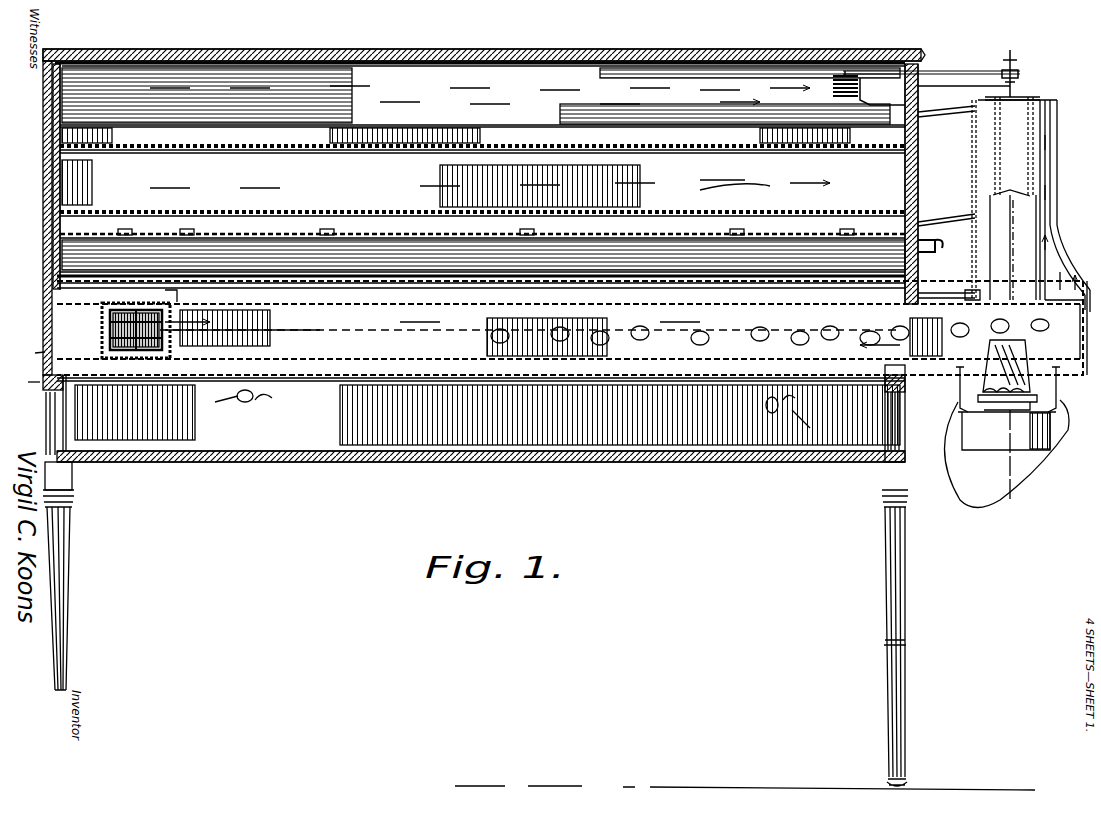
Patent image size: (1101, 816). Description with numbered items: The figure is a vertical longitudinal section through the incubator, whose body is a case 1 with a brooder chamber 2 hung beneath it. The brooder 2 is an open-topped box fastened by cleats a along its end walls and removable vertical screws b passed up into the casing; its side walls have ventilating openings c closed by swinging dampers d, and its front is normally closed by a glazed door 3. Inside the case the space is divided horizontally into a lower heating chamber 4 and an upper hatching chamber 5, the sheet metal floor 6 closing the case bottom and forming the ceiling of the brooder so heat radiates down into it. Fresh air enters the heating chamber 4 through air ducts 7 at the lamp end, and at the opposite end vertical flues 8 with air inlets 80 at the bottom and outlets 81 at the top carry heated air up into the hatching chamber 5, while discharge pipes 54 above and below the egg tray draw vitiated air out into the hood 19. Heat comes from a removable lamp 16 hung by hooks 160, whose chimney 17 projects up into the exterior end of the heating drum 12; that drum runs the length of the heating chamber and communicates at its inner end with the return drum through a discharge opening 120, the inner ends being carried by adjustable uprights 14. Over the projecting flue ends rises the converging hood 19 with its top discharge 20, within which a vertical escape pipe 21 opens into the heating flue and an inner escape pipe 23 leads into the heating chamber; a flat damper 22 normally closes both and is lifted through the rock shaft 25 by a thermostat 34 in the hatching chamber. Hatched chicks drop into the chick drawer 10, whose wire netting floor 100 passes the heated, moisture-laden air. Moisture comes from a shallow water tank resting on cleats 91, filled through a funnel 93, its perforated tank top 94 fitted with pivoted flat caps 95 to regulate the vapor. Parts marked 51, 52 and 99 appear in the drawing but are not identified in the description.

The case 1 is at (598, 50).
The brooder chamber 2 is at (510, 452).
The door 3 is at (78, 432).
The heating chamber 4 is at (384, 340).
The hatching chamber 5 is at (1060, 330).
The floor 6 is at (458, 372).
The air ducts 7 is at (908, 376).
The vertical flues 8 is at (46, 208).
The chick drawer 10 is at (418, 190).
The heating drum 12 is at (604, 333).
The uprights 14 is at (212, 290).
The lamp 16 is at (997, 450).
The metal chimney 17 is at (1037, 352).
The hood 19 is at (1060, 262).
The top discharge 20 is at (1052, 135).
The escape pipe 21 is at (1052, 222).
The damper 22 is at (1038, 97).
The escape pipe 23 is at (1015, 188).
The rock shaft 25 is at (962, 56).
The thermostat 34 is at (876, 108).
The partition 51 is at (412, 144).
The end wall 52 is at (903, 168).
The discharge pipes 54 is at (952, 118).
The air inlets 80 is at (55, 293).
The outlets 81 is at (138, 95).
The cleats 91 is at (78, 280).
The funnel 93 is at (940, 248).
The tank top 94 is at (305, 235).
The flat caps 95 is at (140, 234).
The tray bottom 99 is at (540, 255).
The wire netting floor 100 is at (632, 211).
The discharge opening 120 is at (130, 360).
The hooks 160 is at (1004, 464).
The cleats a is at (880, 394).
The vertical screws b is at (880, 418).
The ventilating openings c is at (525, 418).
The dampers d is at (513, 417).